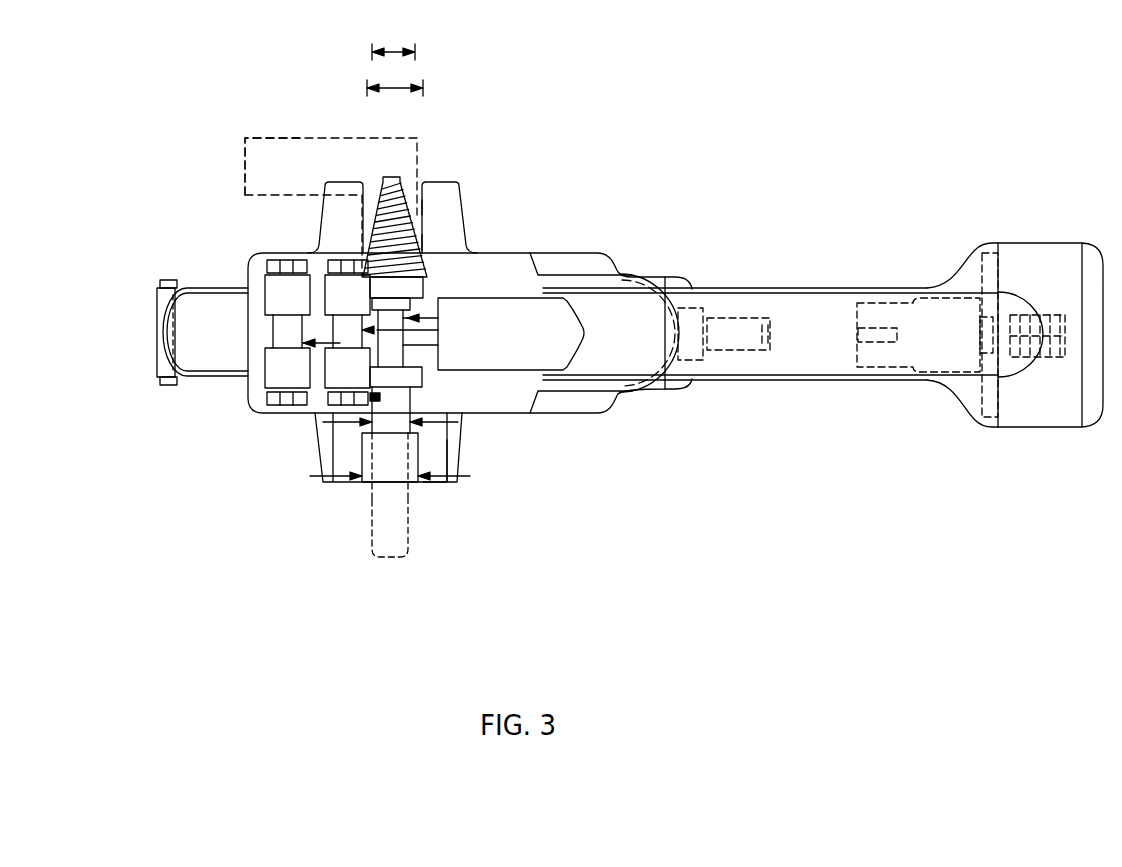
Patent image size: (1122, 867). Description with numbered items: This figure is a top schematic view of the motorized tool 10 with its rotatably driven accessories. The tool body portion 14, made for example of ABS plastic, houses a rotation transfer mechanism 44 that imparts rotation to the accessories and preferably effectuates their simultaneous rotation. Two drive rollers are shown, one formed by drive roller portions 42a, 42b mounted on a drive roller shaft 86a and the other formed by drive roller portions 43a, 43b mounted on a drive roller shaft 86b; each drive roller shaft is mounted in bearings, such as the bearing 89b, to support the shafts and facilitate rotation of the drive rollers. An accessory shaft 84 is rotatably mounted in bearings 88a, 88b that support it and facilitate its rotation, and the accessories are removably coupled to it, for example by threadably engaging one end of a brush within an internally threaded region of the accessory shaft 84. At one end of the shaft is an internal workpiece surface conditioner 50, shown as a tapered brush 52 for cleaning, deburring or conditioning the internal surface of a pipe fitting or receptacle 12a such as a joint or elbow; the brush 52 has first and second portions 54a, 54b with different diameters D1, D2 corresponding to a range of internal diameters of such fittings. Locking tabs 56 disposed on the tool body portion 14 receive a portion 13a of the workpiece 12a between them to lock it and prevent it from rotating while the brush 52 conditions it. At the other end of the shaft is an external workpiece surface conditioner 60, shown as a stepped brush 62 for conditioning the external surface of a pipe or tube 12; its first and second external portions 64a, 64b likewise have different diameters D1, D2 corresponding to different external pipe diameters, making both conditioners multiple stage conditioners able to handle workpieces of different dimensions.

The motorized tool 10 is at (765, 86).
The workpiece 12 is at (408, 525).
The workpiece 12a is at (205, 168).
The portion 13a is at (271, 137).
The tool body portion 14 is at (583, 253).
The drive roller portion 42a is at (287, 287).
The drive roller portion 42b is at (287, 368).
The drive roller portion 43a is at (347, 287).
The drive roller portion 43b is at (352, 376).
The rotation transfer mechanism 44 is at (509, 346).
The internal workpiece surface conditioner 50 is at (411, 190).
The brush 52 is at (370, 197).
The first portion 54a is at (436, 204).
The second portion 54b is at (437, 241).
The locking tabs 56 is at (341, 182).
The external workpiece surface conditioner 60 is at (383, 485).
The brush 62 is at (449, 483).
The first external portion 64a is at (457, 470).
The second external portion 64b is at (406, 480).
The accessory shaft 84 is at (422, 368).
The drive roller shaft 86a is at (273, 328).
The drive roller shaft 86b is at (340, 328).
The bearing 88a is at (432, 288).
The bearing 88b is at (467, 413).
The bearing 89b is at (272, 400).
The diameter D1 is at (393, 52).
The diameter D2 is at (402, 88).